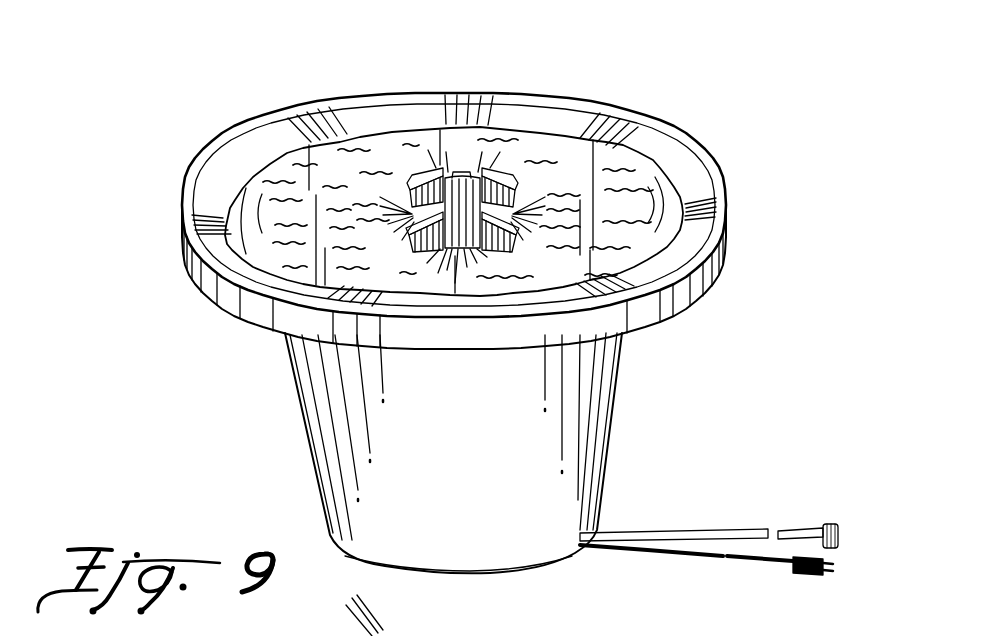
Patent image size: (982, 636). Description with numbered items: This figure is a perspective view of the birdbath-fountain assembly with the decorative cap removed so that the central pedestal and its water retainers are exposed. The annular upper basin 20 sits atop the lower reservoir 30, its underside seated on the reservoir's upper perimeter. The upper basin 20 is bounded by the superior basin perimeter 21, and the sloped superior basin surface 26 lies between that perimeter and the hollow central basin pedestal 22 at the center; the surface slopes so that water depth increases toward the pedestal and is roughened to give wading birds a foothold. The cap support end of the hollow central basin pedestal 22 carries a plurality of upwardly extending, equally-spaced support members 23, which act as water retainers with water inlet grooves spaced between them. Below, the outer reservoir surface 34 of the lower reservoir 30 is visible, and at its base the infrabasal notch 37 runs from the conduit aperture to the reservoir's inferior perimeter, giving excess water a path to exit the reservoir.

The upper basin 20 is at (187, 222).
The superior basin perimeter 21 is at (703, 151).
The hollow central basin pedestal 22 is at (413, 170).
The support members 23 is at (490, 168).
The superior basin surface 26 is at (641, 130).
The lower reservoir 30 is at (298, 385).
The outer reservoir surface 34 is at (377, 467).
The infrabasal notch 37 is at (565, 538).